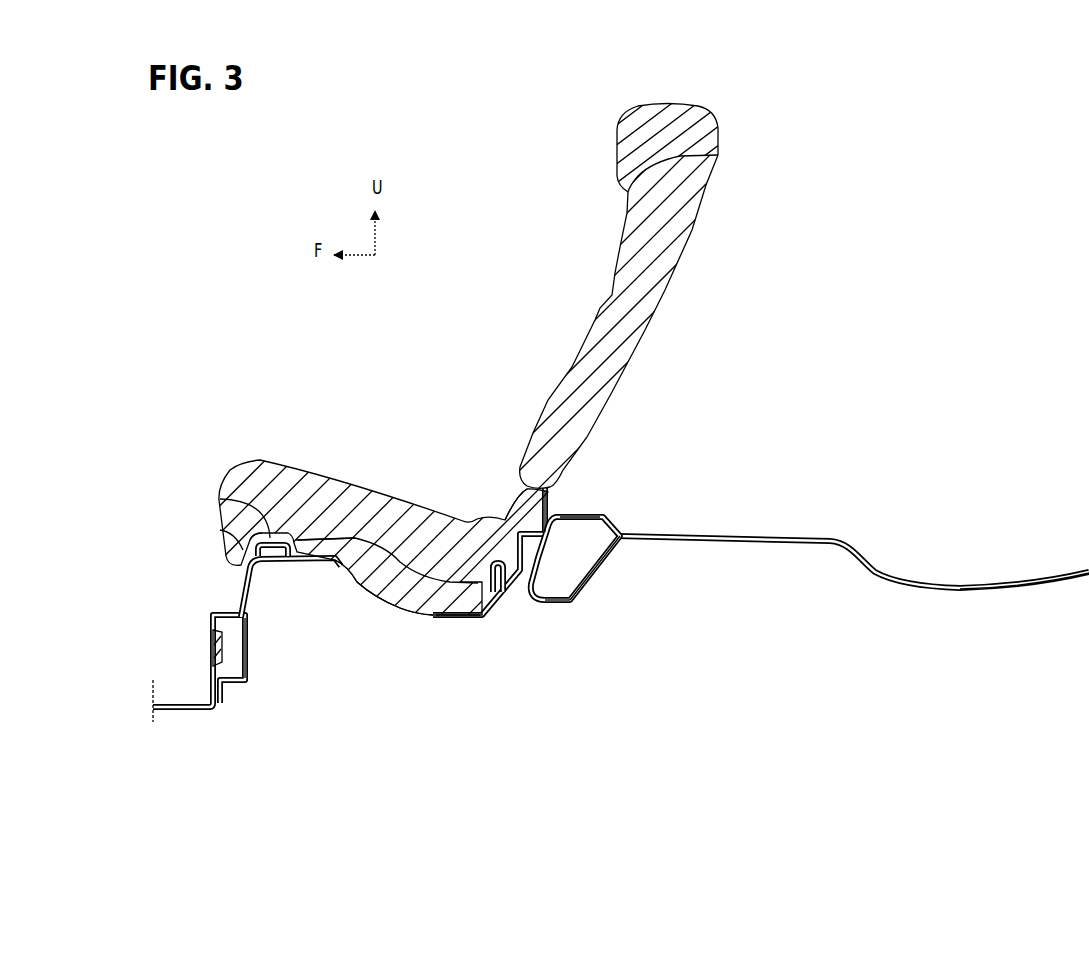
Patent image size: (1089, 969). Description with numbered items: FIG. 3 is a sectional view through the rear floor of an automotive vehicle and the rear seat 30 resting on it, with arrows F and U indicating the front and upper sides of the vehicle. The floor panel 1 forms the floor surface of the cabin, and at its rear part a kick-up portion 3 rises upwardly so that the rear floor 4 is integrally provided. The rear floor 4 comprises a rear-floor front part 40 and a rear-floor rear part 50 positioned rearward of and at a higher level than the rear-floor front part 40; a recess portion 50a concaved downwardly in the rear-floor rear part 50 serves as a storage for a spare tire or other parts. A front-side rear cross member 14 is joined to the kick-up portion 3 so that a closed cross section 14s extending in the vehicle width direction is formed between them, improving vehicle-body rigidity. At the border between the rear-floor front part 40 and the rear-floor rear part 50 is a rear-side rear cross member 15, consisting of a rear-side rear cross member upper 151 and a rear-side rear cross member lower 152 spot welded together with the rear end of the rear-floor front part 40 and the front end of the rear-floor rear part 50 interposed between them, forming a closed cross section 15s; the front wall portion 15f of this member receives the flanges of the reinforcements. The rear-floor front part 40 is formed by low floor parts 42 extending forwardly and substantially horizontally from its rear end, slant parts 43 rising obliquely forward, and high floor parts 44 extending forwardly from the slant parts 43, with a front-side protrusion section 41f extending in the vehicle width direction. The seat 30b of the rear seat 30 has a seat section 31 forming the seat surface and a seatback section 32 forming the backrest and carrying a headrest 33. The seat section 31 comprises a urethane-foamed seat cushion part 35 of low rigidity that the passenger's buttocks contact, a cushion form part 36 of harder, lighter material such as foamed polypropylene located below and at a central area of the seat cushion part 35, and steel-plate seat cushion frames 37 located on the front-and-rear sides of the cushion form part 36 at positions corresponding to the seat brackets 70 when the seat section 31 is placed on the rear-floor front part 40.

The floor panel 1 is at (178, 714).
The kick-up portion 3 is at (212, 647).
The rear floor 4 is at (665, 567).
The front-side rear cross member 14 is at (239, 659).
The closed cross section 14s is at (234, 645).
The rear-side rear cross member 15 is at (571, 552).
The front wall portion 15f is at (513, 504).
The closed cross section 15s is at (570, 563).
The rear-side rear cross member upper 151 is at (595, 515).
The rear-side rear cross member lower 152 is at (553, 603).
The rear seat 30 is at (469, 334).
The seat 30b is at (381, 423).
The seat section 31 is at (338, 478).
The seatback section 32 is at (678, 256).
The headrest 33 is at (619, 128).
The seat cushion part 35 is at (418, 522).
The cushion form part 36 is at (390, 604).
The seat cushion frame 37 is at (240, 534).
The rear-floor front part 40 is at (393, 580).
The front-side protrusion section 41f is at (278, 566).
The low floor part 42 is at (477, 620).
The slant part 43 is at (350, 536).
The high floor part 44 is at (302, 578).
The rear-floor rear part 50 is at (853, 526).
The recess portion 50a is at (1005, 583).
The seat bracket 70 is at (220, 499).